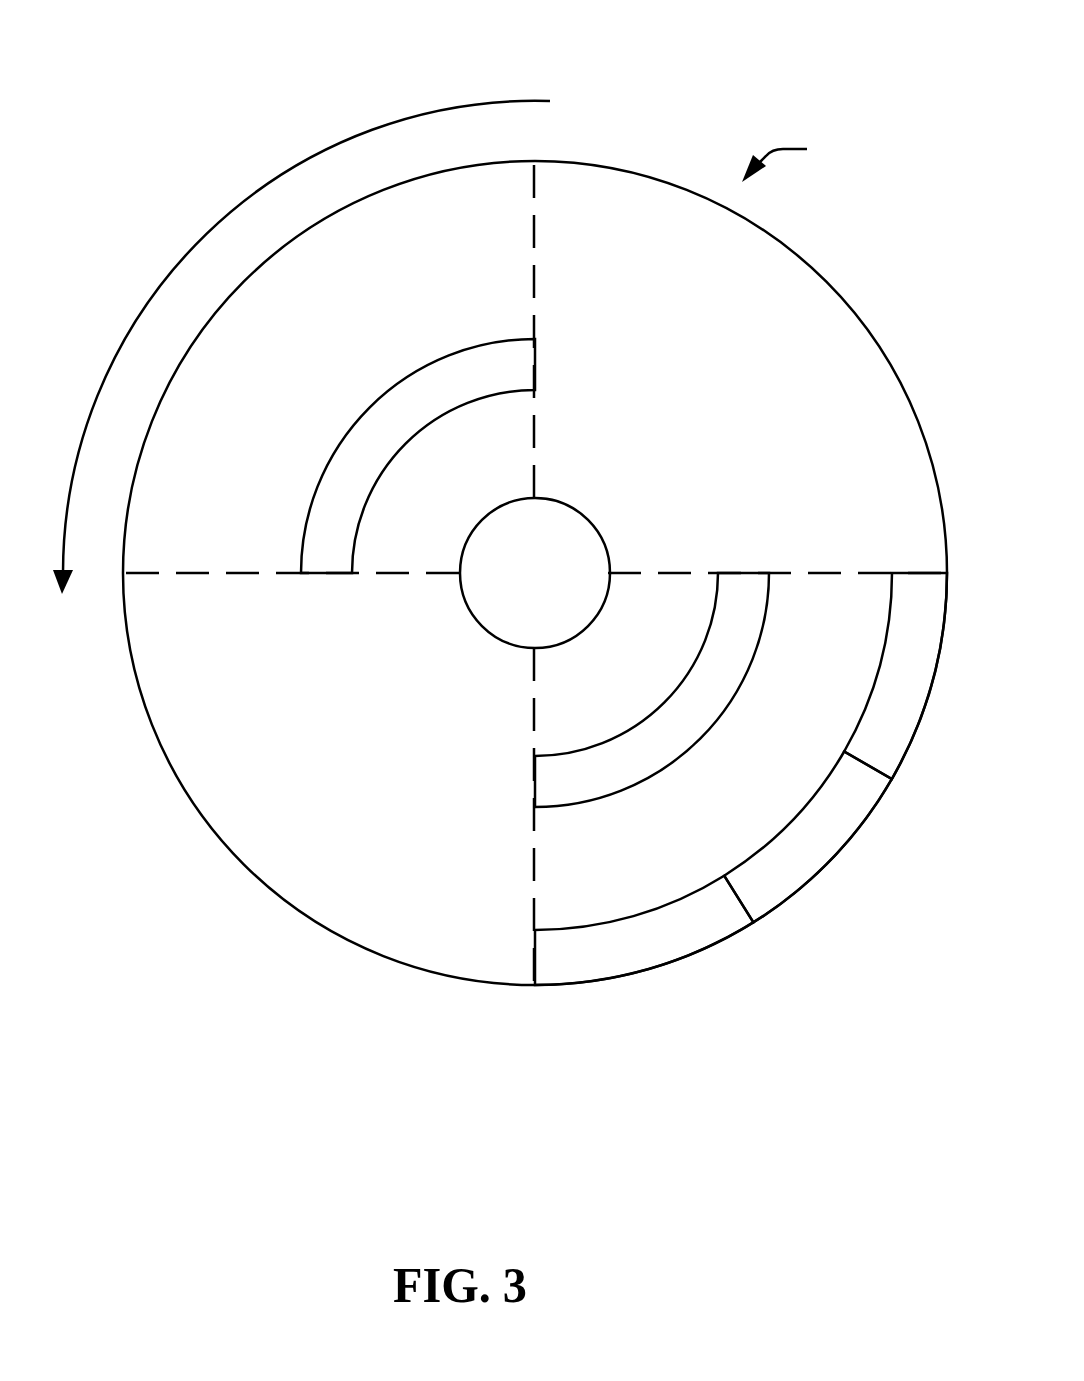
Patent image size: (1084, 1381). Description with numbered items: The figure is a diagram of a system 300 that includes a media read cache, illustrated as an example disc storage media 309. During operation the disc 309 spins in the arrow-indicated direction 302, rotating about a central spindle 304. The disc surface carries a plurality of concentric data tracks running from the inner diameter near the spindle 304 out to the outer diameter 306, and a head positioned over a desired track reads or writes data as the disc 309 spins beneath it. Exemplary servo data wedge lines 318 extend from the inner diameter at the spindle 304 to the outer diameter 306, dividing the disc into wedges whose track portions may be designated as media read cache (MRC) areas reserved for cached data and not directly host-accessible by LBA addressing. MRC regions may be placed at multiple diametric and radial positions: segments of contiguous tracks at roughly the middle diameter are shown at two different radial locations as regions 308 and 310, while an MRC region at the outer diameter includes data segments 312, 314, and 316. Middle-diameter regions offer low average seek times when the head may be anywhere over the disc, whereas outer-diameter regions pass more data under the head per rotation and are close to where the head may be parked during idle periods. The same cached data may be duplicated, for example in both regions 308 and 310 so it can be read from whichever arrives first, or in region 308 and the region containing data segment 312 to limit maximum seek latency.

The system 300 is at (132, 22).
The arrow-indicated direction 302 is at (450, 112).
The central spindle 304 is at (588, 520).
The outer diameter 306 is at (237, 860).
The MRC region 308 is at (435, 360).
The disc storage media 309 is at (796, 163).
The MRC region 310 is at (650, 712).
The data segment 312 is at (878, 680).
The data segment 314 is at (788, 822).
The data segment 316 is at (636, 912).
The servo data wedge lines 318 is at (534, 278).